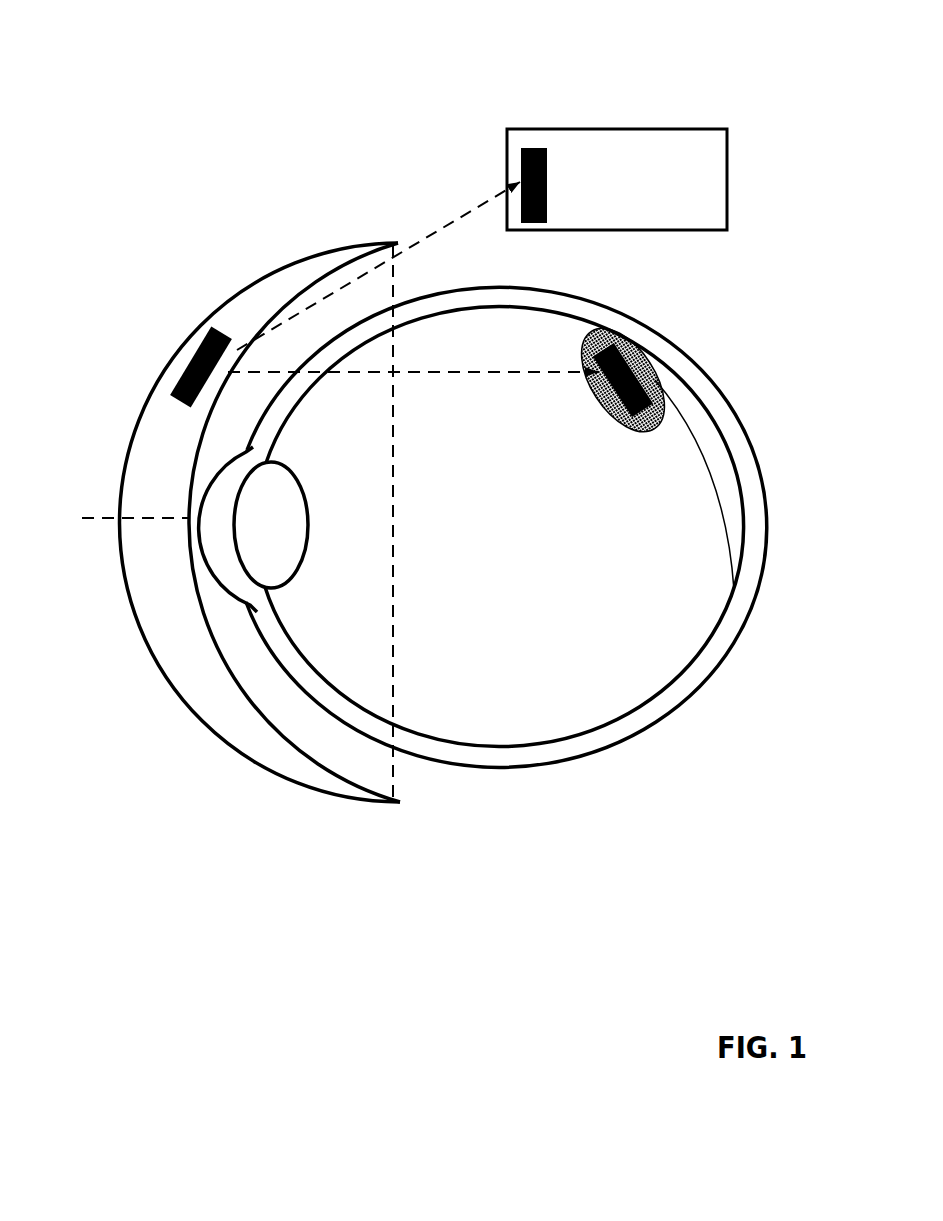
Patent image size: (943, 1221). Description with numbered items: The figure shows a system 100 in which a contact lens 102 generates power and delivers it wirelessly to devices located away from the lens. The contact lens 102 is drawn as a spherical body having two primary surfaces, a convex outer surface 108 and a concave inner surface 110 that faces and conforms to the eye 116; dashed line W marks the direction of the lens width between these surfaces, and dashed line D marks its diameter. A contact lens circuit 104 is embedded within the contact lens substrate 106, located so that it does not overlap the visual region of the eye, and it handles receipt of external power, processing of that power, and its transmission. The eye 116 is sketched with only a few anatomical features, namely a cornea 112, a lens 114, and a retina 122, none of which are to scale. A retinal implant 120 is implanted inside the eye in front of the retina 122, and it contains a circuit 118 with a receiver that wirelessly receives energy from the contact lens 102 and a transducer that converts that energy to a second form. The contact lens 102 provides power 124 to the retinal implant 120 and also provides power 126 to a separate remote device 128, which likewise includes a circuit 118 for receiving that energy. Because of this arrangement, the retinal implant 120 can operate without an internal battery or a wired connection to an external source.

The system 100 is at (432, 77).
The contact lens 102 is at (228, 295).
The contact lens circuit 104 is at (190, 363).
The contact lens substrate 106 is at (168, 655).
The outer surface 108 is at (108, 550).
The inner surface 110 is at (195, 590).
The cornea 112 is at (212, 478).
The lens 114 is at (280, 537).
The eye 116 is at (673, 712).
The circuit 118 is at (631, 356).
The retinal implant 120 is at (652, 423).
The retina 122 is at (707, 443).
The power 124 is at (395, 373).
The power 126 is at (457, 219).
The remote device 128 is at (617, 179).